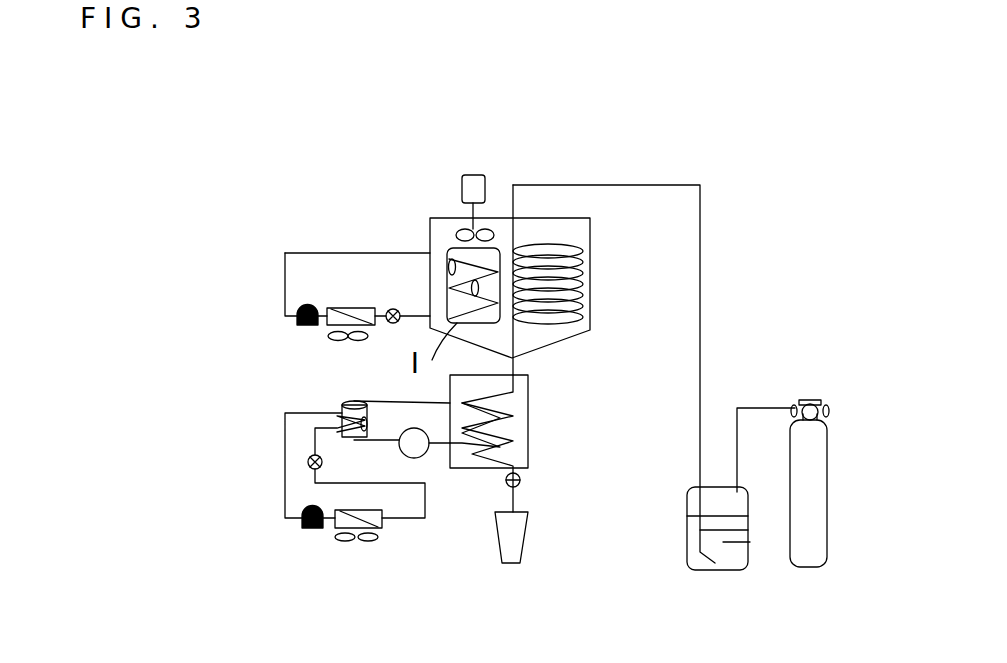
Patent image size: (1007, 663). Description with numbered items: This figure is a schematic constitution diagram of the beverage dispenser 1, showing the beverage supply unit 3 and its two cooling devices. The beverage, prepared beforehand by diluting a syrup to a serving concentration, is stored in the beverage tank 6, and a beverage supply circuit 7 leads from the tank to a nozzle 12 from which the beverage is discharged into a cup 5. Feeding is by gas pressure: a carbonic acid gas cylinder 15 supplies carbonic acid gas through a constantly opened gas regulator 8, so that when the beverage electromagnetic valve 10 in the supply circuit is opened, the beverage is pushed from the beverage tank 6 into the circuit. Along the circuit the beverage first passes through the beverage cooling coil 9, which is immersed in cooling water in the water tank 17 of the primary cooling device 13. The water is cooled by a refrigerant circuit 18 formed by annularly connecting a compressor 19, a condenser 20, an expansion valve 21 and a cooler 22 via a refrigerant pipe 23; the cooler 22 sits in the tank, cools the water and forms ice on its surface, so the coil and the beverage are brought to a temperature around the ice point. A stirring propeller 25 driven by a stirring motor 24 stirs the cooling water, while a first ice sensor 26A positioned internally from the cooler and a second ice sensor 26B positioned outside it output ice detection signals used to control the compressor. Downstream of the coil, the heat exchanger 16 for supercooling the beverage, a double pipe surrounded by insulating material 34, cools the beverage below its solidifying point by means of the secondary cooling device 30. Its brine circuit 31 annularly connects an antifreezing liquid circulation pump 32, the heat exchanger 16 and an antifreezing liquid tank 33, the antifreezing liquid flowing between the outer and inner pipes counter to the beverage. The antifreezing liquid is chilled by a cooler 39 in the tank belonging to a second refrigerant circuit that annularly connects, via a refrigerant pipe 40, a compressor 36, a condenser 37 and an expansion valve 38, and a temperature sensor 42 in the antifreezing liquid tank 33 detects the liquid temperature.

The beverage dispenser 1 is at (362, 87).
The beverage supply unit 3 is at (799, 346).
The cup 5 is at (520, 548).
The beverage tank 6 is at (732, 562).
The beverage supply circuit 7 is at (638, 185).
The gas regulator 8 is at (815, 401).
The beverage cooling coil 9 is at (581, 272).
The beverage electromagnetic valve 10 is at (520, 484).
The nozzle 12 is at (503, 503).
The primary cooling device 13 is at (266, 172).
The carbonic acid gas cylinder 15 is at (812, 492).
The heat exchanger for supercooling the beverage 16 is at (542, 435).
The water tank 17 is at (560, 218).
The refrigerant circuit 18 is at (318, 253).
The compressor 19 is at (297, 326).
The condenser 20 is at (343, 308).
The expansion valve 21 is at (392, 310).
The cooler 22 is at (489, 262).
The refrigerant pipe 23 is at (285, 256).
The stirring motor 24 is at (463, 176).
The stirring propeller 25 is at (459, 229).
The first ice sensor 26A is at (482, 294).
The second ice sensor 26B is at (449, 270).
The secondary cooling device 30 is at (258, 571).
The brine circuit 31 is at (457, 444).
The antifreezing liquid circulation pump 32 is at (417, 453).
The antifreezing liquid tank 33 is at (345, 407).
The insulating material 34 is at (528, 457).
The compressor 36 is at (308, 533).
The condenser 37 is at (358, 531).
The expansion valve 38 is at (315, 463).
The cooler 39 is at (337, 425).
The refrigerant pipe 40 is at (285, 518).
The temperature sensor 42 is at (367, 402).